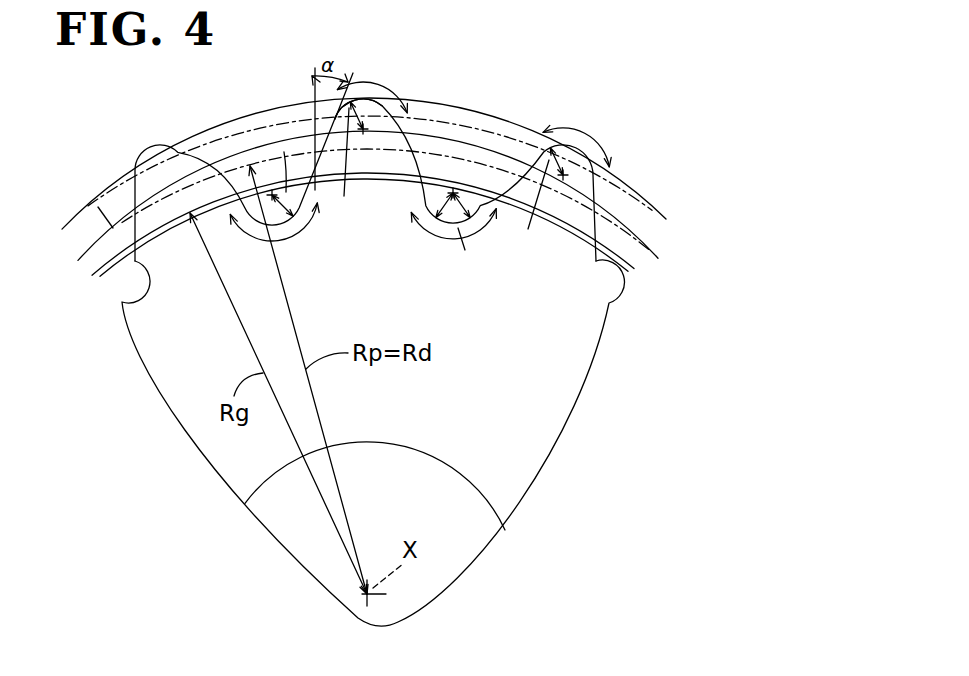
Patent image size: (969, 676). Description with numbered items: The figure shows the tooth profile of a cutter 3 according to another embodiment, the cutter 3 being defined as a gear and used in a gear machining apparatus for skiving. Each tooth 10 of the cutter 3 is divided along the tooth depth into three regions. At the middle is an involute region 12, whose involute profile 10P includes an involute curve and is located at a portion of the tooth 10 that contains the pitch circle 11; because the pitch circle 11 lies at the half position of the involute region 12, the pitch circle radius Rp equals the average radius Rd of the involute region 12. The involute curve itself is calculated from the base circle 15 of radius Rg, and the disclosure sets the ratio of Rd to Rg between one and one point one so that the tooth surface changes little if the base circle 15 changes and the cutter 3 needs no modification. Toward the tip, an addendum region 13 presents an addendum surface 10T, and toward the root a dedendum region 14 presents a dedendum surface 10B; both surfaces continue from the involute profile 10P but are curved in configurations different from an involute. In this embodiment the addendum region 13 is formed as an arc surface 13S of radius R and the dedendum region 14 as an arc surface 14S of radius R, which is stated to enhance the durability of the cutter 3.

The cutter 3 is at (527, 475).
The tooth 10 is at (140, 156).
The addendum surface 10T is at (596, 156).
The involute profile (surface) 10P is at (597, 204).
The dedendum surface 10B is at (598, 263).
The pitch circle 11 is at (95, 203).
The involute region 12 is at (465, 148).
The addendum region 13 is at (473, 110).
The arc surface 13S is at (378, 84).
The dedendum region 14 is at (410, 214).
The arc surface 14S is at (298, 236).
The base circle 15 is at (104, 276).